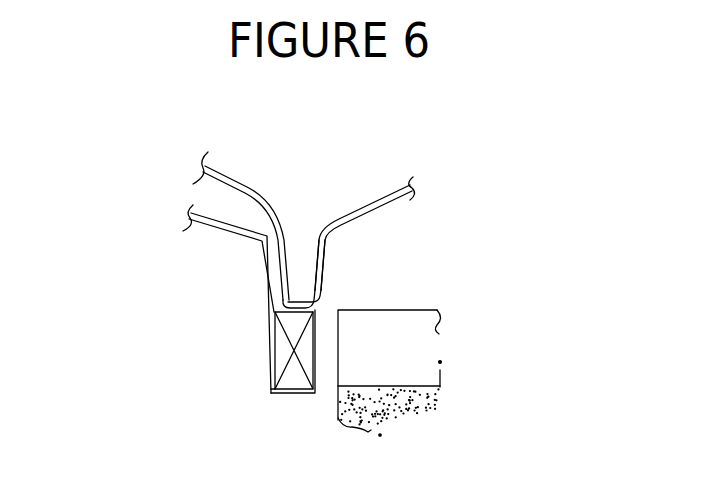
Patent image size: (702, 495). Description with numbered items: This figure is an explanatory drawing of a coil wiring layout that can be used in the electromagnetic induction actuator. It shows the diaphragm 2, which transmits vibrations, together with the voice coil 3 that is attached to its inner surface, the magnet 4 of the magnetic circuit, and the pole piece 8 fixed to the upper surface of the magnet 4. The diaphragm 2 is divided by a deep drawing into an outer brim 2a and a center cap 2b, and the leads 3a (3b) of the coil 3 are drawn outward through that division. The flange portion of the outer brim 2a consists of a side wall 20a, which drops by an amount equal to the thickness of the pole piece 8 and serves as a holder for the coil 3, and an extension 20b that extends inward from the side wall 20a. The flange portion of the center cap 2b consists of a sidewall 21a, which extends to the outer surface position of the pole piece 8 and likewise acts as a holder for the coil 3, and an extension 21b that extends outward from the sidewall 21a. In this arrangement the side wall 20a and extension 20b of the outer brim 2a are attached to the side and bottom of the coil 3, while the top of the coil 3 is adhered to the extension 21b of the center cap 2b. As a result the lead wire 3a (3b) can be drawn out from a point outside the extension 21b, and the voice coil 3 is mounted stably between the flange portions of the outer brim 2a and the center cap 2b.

The diaphragm 2 is at (352, 200).
The outer brim 2a is at (228, 240).
The center cap 2b is at (347, 230).
The voice coil 3 is at (318, 358).
The lead wire 3a is at (245, 211).
The lead wire 3b is at (269, 212).
The magnet 4 is at (441, 392).
The pole piece 8 is at (436, 310).
The side wall 20a is at (267, 340).
The extension 20b is at (281, 394).
The sidewall 21a is at (323, 262).
The extension 21b is at (290, 306).